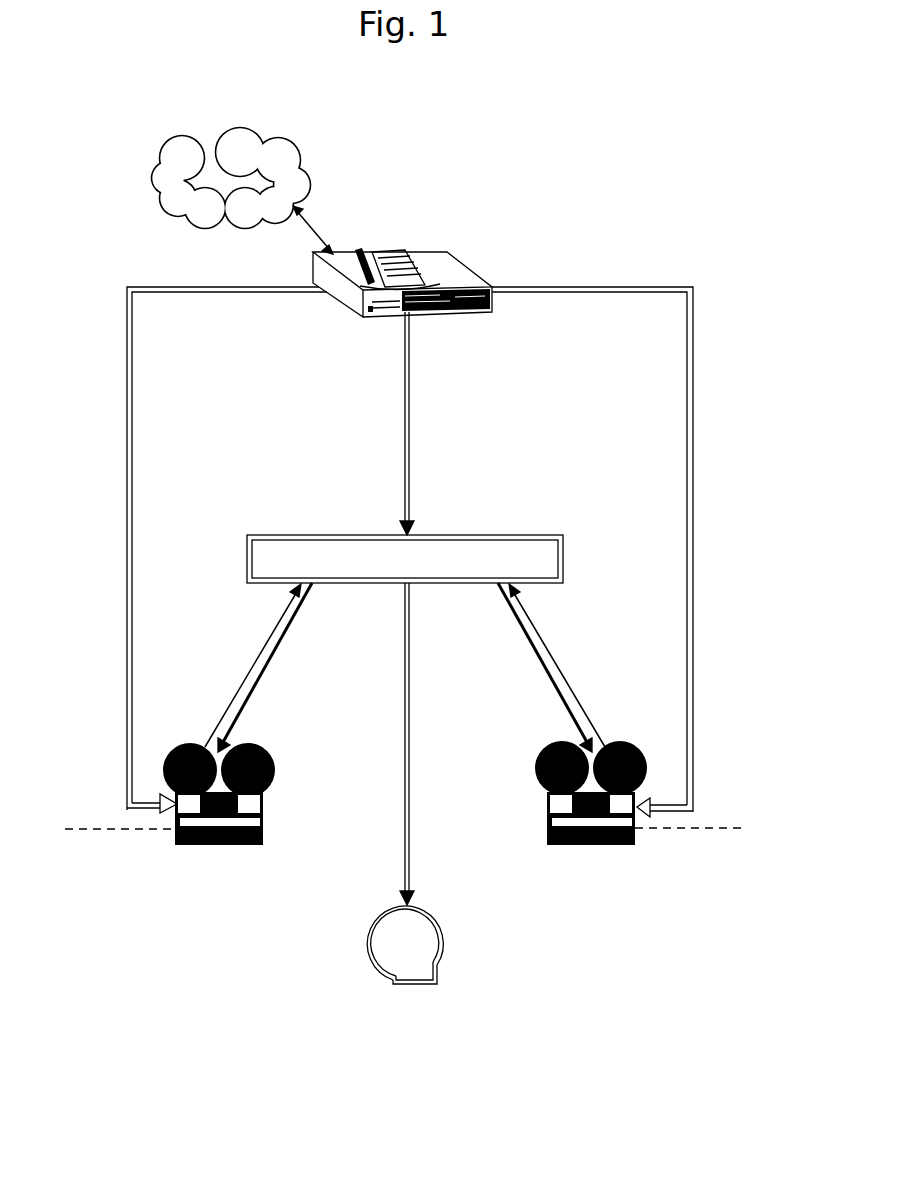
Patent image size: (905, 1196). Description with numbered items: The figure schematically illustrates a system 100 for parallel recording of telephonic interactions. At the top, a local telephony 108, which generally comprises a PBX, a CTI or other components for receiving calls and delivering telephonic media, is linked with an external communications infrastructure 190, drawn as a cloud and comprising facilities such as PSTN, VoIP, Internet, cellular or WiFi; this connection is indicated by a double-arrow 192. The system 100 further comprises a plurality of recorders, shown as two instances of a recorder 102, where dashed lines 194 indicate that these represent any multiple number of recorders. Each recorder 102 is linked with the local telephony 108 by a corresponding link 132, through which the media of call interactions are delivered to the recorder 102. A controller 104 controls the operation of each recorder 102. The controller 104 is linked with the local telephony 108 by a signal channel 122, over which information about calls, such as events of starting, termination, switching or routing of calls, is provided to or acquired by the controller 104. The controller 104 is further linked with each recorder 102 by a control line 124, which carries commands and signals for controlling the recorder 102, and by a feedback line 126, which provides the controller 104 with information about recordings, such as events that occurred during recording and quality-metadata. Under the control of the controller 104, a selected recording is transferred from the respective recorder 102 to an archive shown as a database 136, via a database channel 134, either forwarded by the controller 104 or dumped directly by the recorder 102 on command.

The system 100 is at (706, 149).
The recorder 102 is at (215, 845).
The controller 104 is at (563, 554).
The local telephony 108 is at (467, 263).
The signal channel 122 is at (409, 448).
The control line 124 is at (270, 670).
The feedback line 126 is at (257, 660).
The link 132 is at (127, 554).
The database channel 134 is at (409, 830).
The database 136 is at (380, 970).
The communications infrastructure 190 is at (170, 212).
The double-arrow 192 is at (315, 233).
The dashed lines 194 is at (70, 830).